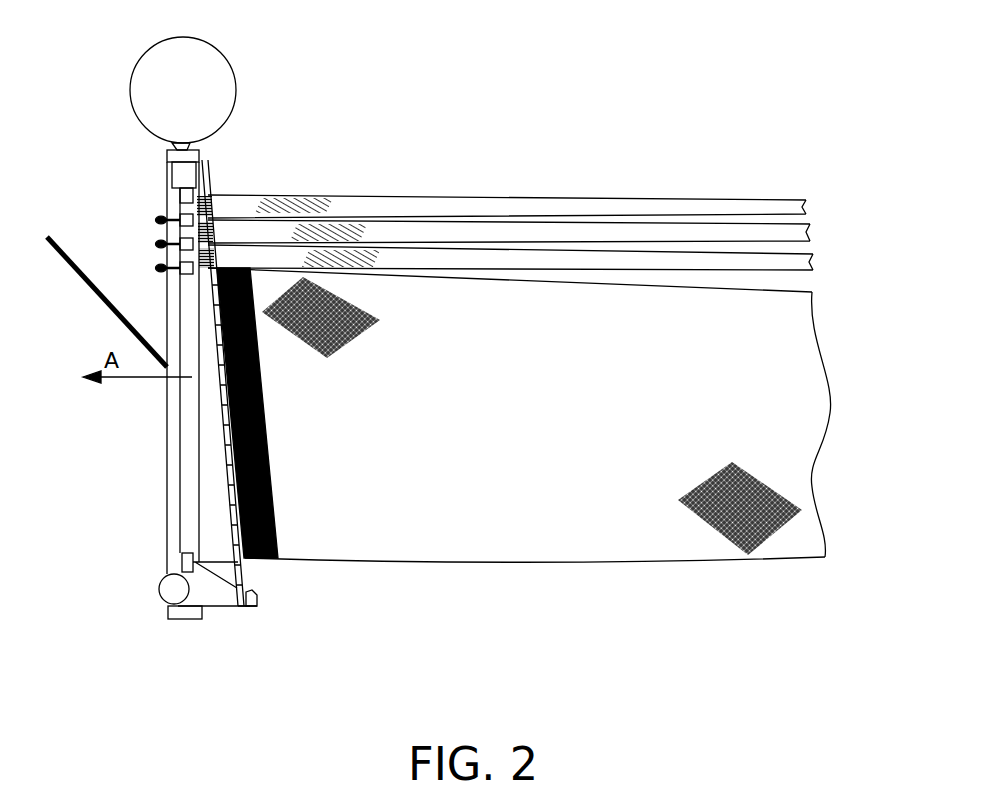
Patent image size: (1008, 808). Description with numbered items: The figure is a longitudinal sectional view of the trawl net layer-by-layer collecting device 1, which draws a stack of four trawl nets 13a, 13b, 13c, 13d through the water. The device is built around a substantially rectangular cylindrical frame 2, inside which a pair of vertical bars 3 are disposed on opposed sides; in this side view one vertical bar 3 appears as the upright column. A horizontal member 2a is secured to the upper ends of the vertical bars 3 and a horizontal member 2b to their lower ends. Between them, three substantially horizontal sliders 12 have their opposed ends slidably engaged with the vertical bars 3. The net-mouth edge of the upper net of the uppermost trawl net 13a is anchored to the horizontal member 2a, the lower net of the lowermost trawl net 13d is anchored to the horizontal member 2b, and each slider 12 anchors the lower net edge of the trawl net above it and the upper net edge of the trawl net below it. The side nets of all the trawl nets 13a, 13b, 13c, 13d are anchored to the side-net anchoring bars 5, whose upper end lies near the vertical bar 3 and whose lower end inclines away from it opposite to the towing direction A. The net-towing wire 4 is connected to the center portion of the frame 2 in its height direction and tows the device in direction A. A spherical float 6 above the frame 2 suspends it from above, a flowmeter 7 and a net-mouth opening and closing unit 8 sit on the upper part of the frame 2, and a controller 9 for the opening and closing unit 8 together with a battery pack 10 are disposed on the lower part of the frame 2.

The trawl net layer-by-layer collecting device 1 is at (387, 106).
The frame 2 is at (193, 157).
The horizontal member 2a is at (181, 196).
The horizontal member 2b is at (182, 562).
The vertical bar 3 is at (168, 302).
The net-towing wire 4 is at (88, 278).
The side-net anchoring bar 5 is at (220, 443).
The float 6 is at (210, 58).
The flowmeter 7 is at (151, 165).
The net-mouth opening and closing unit 8 is at (178, 175).
The controller 9 is at (177, 596).
The battery pack 10 is at (177, 596).
The slider 12 is at (157, 267).
The trawl net 13a is at (805, 206).
The trawl net 13b is at (808, 233).
The trawl net 13c is at (810, 263).
The trawl net 13d is at (789, 317).